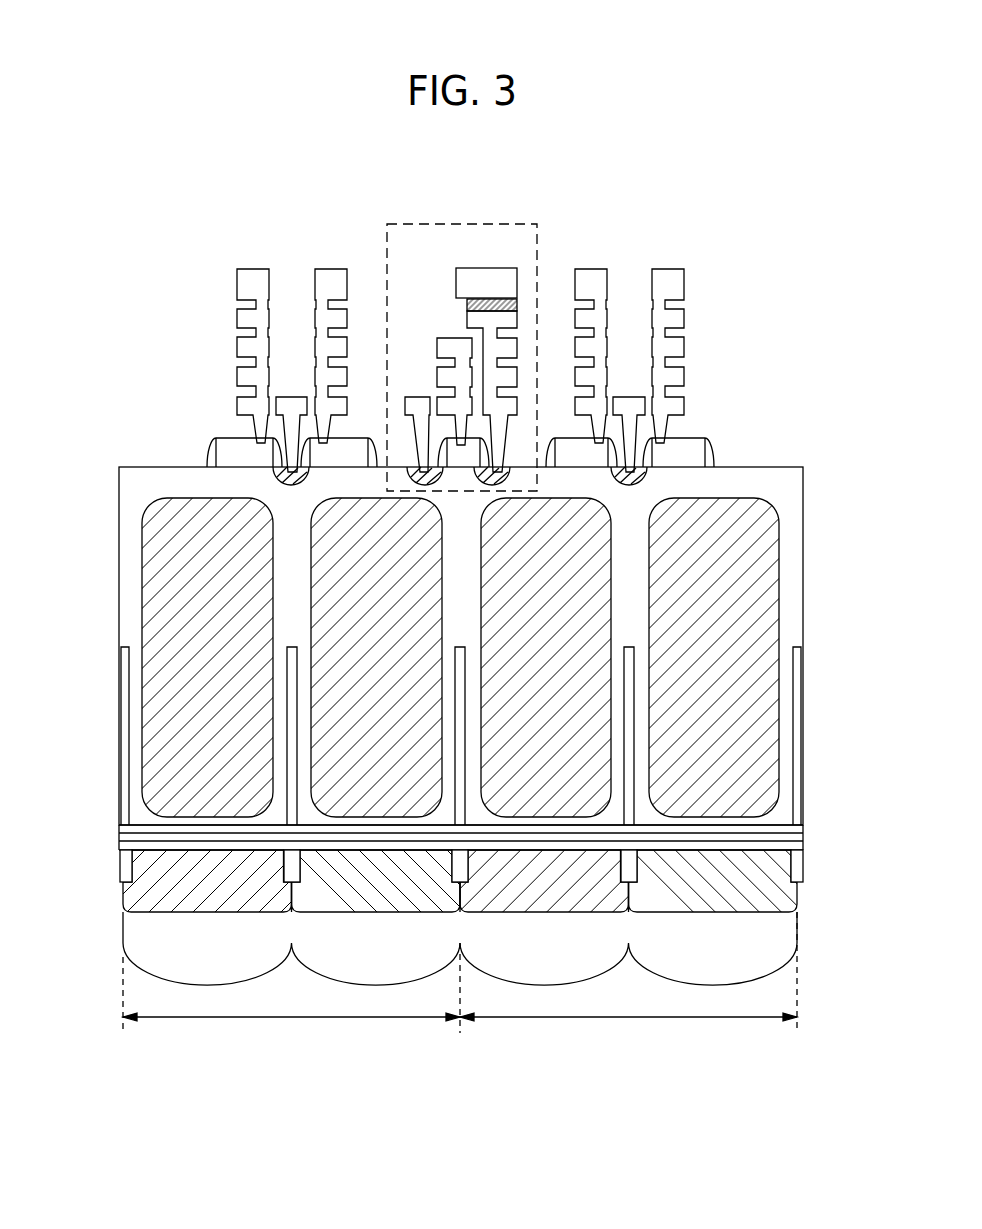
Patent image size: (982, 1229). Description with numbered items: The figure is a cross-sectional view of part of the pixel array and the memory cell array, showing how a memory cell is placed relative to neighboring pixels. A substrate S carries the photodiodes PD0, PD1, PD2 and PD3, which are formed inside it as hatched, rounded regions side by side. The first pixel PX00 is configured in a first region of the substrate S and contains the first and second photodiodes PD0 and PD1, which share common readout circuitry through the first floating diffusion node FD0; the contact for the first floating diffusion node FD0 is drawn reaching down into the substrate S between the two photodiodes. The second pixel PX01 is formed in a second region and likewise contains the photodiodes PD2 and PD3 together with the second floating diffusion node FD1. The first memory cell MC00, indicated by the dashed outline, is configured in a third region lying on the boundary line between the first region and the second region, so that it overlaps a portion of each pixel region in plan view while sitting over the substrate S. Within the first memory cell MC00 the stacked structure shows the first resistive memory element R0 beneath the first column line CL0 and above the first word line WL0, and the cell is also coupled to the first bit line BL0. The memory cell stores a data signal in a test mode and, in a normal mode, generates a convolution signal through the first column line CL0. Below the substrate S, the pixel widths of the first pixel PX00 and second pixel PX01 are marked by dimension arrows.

The substrate S is at (803, 487).
The first memory cell MC00 is at (460, 224).
The first column line CL0 is at (486, 269).
The first resistive memory element R0 is at (471, 290).
The first word line WL0 is at (471, 389).
The first bit line BL0 is at (417, 419).
The first floating diffusion node FD0 is at (291, 419).
The second floating diffusion node FD1 is at (629, 419).
The first photodiode PD0 is at (142, 544).
The second photodiode PD1 is at (311, 578).
The third photodiode PD2 is at (612, 573).
The fourth photodiode PD3 is at (779, 533).
The first pixel PX00 is at (291, 996).
The second pixel PX01 is at (628, 981).